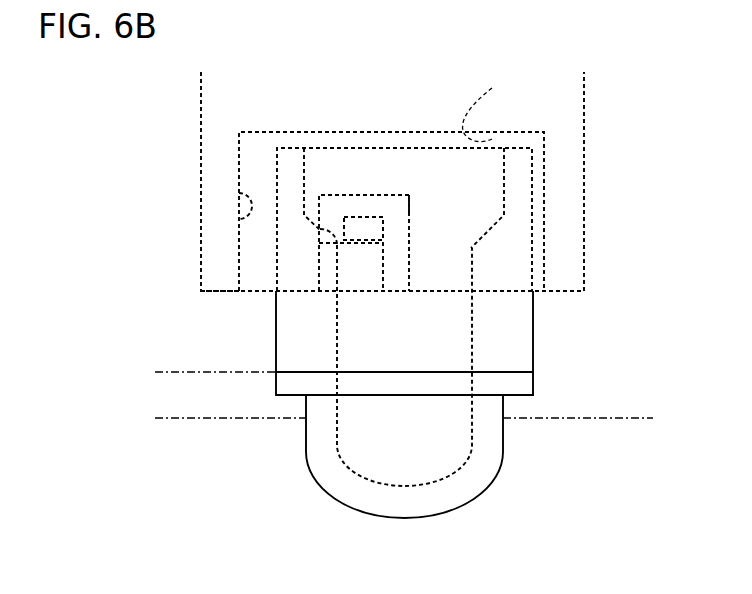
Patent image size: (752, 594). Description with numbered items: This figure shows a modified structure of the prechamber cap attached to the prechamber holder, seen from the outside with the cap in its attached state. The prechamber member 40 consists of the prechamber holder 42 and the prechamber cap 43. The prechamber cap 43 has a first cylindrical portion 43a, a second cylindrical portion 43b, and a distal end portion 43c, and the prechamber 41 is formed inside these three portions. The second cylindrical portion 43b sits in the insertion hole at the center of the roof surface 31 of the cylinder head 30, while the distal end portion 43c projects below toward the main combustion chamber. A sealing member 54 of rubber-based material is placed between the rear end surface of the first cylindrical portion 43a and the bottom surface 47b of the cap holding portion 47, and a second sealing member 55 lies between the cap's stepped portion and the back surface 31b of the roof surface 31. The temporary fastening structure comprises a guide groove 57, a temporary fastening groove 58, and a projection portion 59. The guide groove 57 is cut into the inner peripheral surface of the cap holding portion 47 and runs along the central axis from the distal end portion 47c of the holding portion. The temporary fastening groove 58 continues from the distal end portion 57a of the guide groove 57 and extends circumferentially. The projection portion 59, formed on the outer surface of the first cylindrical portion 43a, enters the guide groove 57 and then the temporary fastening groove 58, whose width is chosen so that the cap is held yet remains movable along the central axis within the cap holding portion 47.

The cylinder head 30 is at (630, 418).
The roof surface 31 is at (182, 418).
The back surface 31b is at (182, 372).
The prechamber member 40 is at (665, 238).
The prechamber 41 is at (472, 358).
The prechamber holder 42 is at (584, 247).
The prechamber cap 43 is at (534, 322).
The first cylindrical portion 43a is at (532, 203).
The second cylindrical portion 43b is at (503, 408).
The distal end portion 43c is at (458, 507).
The cap holding portion 47 is at (239, 215).
The bottom surface 47b is at (494, 104).
The distal end portion 47c is at (217, 292).
The sealing member 54 is at (277, 139).
The sealing member 55 is at (285, 385).
The guide groove 57 is at (385, 272).
The distal end portion 57a is at (409, 213).
The temporary fastening groove 58 is at (322, 230).
The projection portion 59 is at (360, 217).